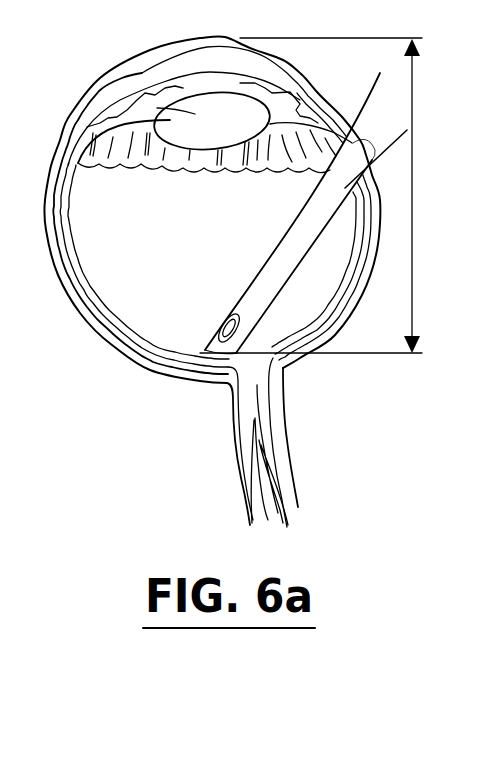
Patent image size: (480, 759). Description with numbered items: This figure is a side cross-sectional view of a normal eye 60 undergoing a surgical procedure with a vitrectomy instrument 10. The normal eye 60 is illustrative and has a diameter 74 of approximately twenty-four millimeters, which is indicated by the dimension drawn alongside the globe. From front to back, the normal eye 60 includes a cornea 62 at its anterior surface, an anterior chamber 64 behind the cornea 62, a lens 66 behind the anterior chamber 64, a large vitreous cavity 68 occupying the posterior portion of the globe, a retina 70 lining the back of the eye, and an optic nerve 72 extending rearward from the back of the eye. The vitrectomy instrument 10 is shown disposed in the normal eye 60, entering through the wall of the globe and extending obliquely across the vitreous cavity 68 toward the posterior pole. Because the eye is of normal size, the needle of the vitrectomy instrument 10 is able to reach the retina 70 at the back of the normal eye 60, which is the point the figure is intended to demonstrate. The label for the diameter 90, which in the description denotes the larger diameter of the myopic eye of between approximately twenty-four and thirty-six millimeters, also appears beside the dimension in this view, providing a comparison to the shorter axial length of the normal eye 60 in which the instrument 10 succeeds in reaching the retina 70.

The vitrectomy instrument 10 is at (248, 290).
The normal eye 60 is at (176, 425).
The cornea 62 is at (193, 63).
The anterior chamber 64 is at (205, 42).
The lens 66 is at (165, 105).
The vitreous cavity 68 is at (305, 288).
The retina 70 is at (133, 337).
The optic nerve 72 is at (267, 448).
The diameter 74 is at (414, 163).
The diameter 90 is at (446, 196).